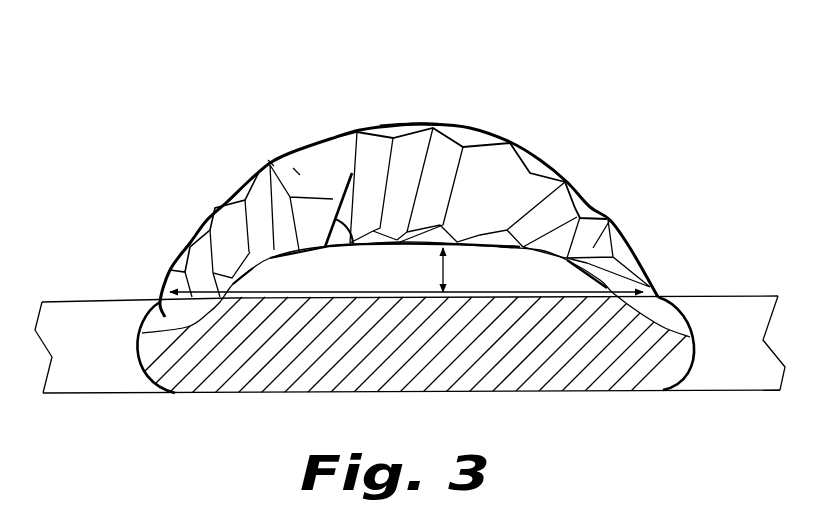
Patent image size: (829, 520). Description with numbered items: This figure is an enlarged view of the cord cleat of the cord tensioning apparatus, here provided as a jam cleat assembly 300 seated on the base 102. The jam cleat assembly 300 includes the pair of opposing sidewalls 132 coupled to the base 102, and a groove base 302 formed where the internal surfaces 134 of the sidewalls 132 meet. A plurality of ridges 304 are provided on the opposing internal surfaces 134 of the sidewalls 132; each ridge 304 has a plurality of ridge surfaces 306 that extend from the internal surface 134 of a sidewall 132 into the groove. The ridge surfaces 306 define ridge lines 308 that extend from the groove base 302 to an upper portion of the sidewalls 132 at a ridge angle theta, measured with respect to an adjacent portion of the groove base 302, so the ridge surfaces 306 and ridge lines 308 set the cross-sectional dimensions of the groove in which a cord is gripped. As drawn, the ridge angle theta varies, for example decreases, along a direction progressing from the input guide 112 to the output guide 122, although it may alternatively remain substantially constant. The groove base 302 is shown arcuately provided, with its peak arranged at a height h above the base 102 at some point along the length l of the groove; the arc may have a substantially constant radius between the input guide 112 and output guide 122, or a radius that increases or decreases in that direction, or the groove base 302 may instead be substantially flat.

The base 102 is at (448, 378).
The input guide 112 is at (158, 297).
The output guide 122 is at (690, 297).
The sidewalls 132 is at (397, 119).
The internal surfaces 134 is at (193, 223).
The jam cleat assembly 300 is at (412, 199).
The groove base 302 is at (412, 221).
The ridges 304 is at (275, 57).
The ridge surfaces 306 is at (333, 168).
The ridge lines 308 is at (270, 162).